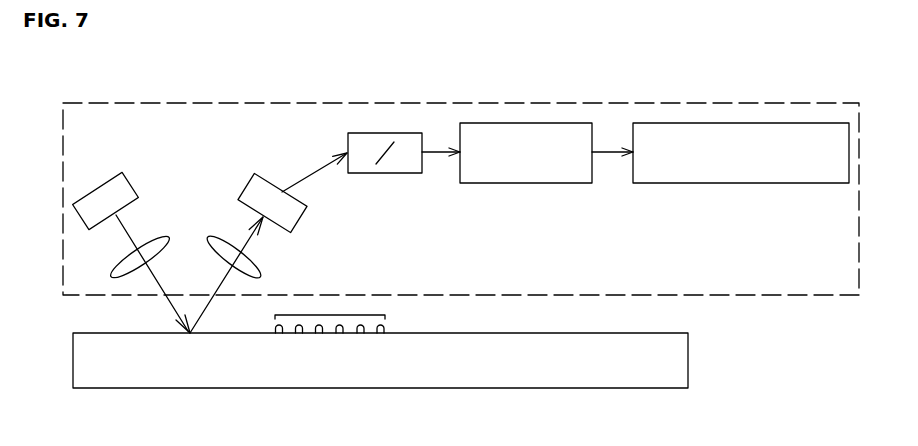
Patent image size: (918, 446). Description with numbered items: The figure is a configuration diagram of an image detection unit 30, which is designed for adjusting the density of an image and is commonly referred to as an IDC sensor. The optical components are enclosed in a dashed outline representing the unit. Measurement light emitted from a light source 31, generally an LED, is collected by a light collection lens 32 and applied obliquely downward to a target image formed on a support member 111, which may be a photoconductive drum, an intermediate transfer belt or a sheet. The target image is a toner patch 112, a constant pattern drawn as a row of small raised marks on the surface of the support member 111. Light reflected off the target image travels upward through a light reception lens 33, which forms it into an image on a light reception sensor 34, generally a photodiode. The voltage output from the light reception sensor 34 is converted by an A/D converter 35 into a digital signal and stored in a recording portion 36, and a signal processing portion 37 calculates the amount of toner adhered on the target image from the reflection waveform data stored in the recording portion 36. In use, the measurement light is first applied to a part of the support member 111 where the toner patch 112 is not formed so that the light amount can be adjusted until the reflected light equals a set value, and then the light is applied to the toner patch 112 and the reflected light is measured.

The image detection unit 30 is at (474, 103).
The light source 31 is at (95, 190).
The light collection lens 32 is at (148, 237).
The light reception lens 33 is at (264, 276).
The light reception sensor 34 is at (263, 174).
The A/D converter 35 is at (378, 174).
The recording portion 36 is at (490, 184).
The signal processing portion 37 is at (745, 184).
The support member 111 is at (570, 333).
The toner patch 112 is at (362, 315).